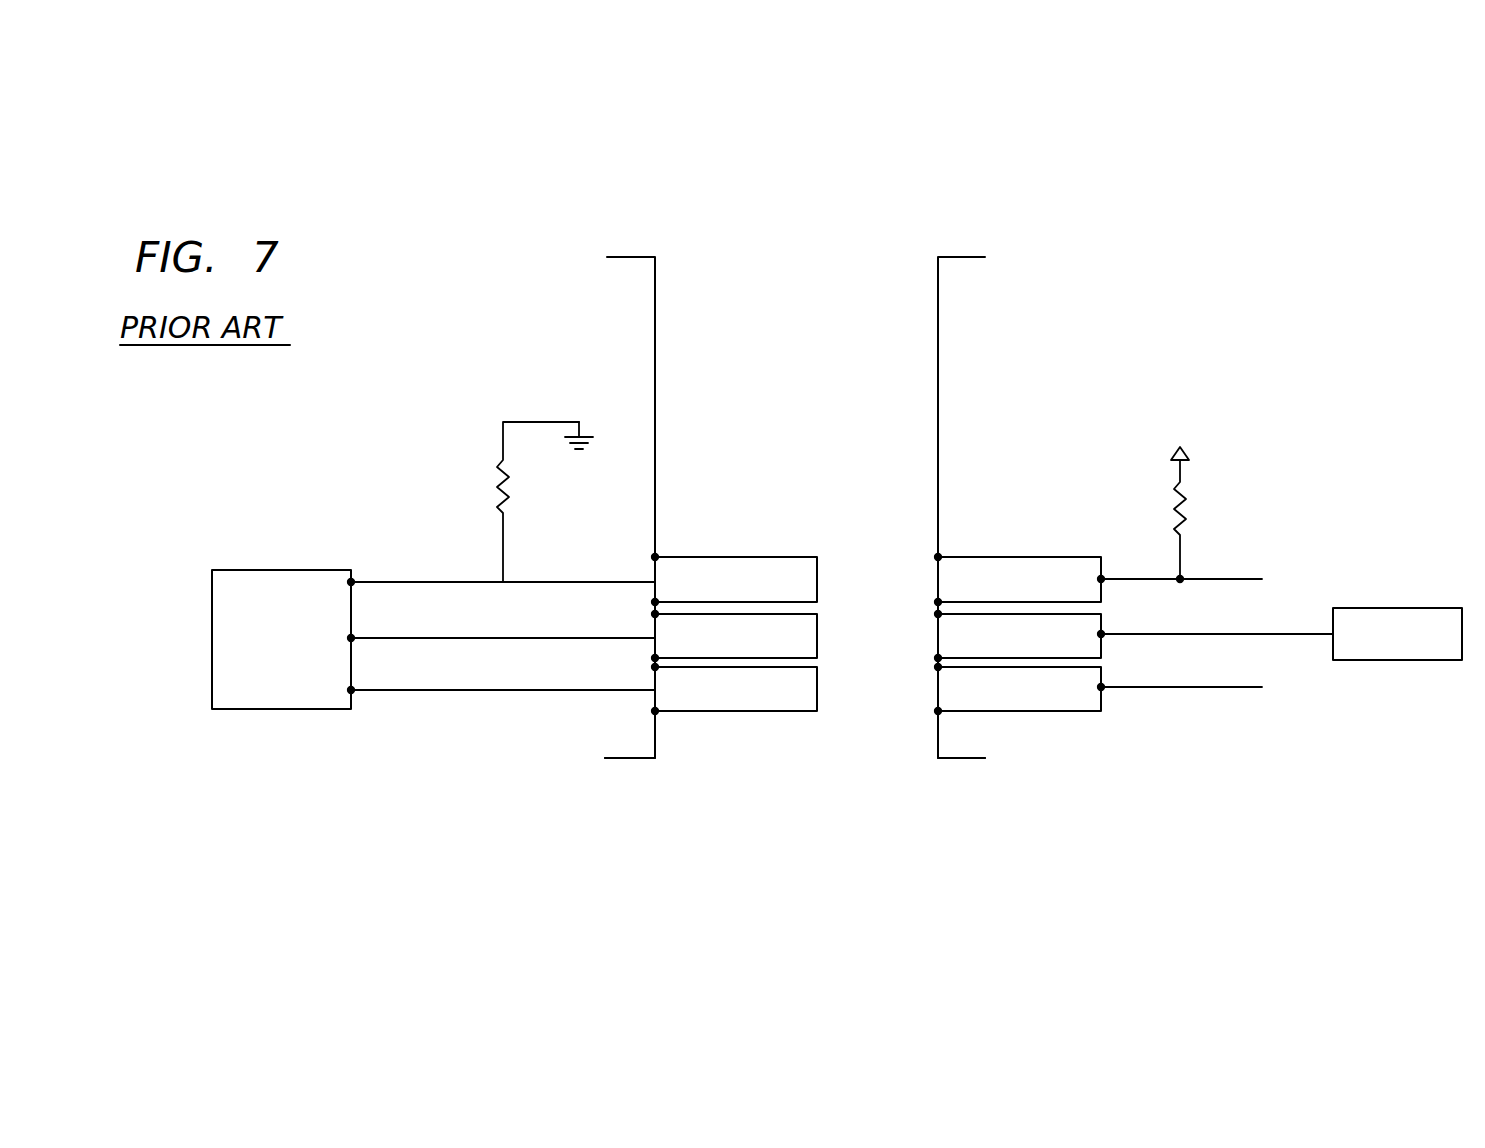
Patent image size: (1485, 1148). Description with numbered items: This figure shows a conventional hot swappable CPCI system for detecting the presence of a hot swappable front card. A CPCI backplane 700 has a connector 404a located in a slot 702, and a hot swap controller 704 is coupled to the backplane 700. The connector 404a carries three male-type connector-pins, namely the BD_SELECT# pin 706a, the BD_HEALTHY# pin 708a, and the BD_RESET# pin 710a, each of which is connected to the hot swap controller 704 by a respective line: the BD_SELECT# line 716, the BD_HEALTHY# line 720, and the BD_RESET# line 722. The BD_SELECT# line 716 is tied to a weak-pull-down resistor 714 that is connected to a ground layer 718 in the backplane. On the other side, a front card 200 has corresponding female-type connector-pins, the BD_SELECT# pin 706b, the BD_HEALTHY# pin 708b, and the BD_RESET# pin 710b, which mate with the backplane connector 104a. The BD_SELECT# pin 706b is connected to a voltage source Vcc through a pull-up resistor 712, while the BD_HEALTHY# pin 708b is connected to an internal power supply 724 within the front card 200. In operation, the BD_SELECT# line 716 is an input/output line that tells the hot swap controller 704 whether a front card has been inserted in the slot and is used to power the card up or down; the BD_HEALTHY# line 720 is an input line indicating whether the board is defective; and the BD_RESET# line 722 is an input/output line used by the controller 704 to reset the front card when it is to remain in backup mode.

The slot 702 is at (629, 273).
The front card 200 is at (970, 273).
The CPCI backplane 700 is at (656, 386).
The hot swap controller 704 is at (283, 570).
The weak-pull-down resistor 714 is at (494, 492).
The ground layer 718 is at (582, 458).
The BD_SELECT# line 716 is at (406, 581).
The BD_HEALTHY# line 720 is at (399, 637).
The BD_RESET# line 722 is at (418, 692).
The BD_SELECT# connector-pin 706a is at (737, 557).
The BD_HEALTHY# connector-pin 708a is at (817, 637).
The BD_RESET# connector-pin 710a is at (735, 711).
The BD_SELECT# connector-pin 706b is at (1020, 557).
The BD_HEALTHY# connector-pin 708b is at (1101, 643).
The BD_RESET# connector-pin 710b is at (1018, 711).
The connector 404a is at (640, 751).
The backplane connector 104a is at (963, 745).
The pull-up resistor 712 is at (1198, 510).
The internal power supply 724 is at (1397, 608).